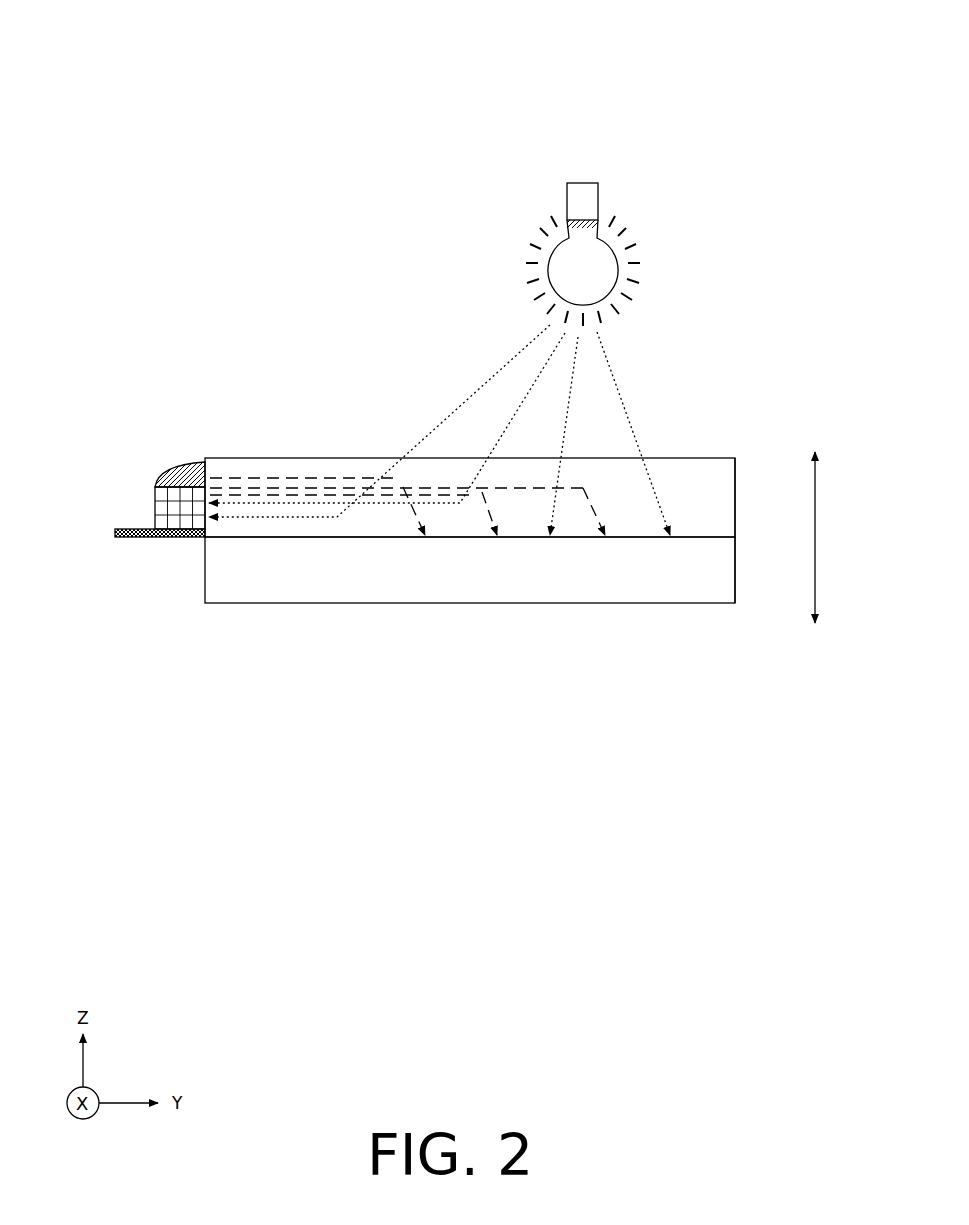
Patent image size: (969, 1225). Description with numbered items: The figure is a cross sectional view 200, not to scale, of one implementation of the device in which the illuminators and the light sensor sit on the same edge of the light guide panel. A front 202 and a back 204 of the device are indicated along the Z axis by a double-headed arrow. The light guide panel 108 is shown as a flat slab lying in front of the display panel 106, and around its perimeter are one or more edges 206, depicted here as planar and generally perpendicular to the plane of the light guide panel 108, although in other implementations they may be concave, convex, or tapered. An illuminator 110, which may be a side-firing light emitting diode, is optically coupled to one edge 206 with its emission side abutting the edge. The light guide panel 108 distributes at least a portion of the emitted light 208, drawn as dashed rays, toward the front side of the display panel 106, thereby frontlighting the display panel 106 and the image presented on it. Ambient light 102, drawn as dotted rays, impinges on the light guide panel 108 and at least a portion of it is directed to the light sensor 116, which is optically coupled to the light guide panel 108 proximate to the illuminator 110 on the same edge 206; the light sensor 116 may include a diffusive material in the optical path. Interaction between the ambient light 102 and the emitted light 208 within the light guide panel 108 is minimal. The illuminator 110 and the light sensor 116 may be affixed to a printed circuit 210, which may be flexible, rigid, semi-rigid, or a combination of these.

The cross sectional view 200 is at (742, 62).
The ambient light 102 is at (607, 353).
The display panel 106 is at (365, 583).
The light guide panel 108 is at (228, 468).
The illuminator 110 is at (190, 465).
The light sensor 116 is at (183, 518).
The front 202 is at (808, 471).
The back 204 is at (812, 606).
The edge 206 is at (738, 457).
The emitted light 208 is at (287, 478).
The printed circuit 210 is at (132, 537).